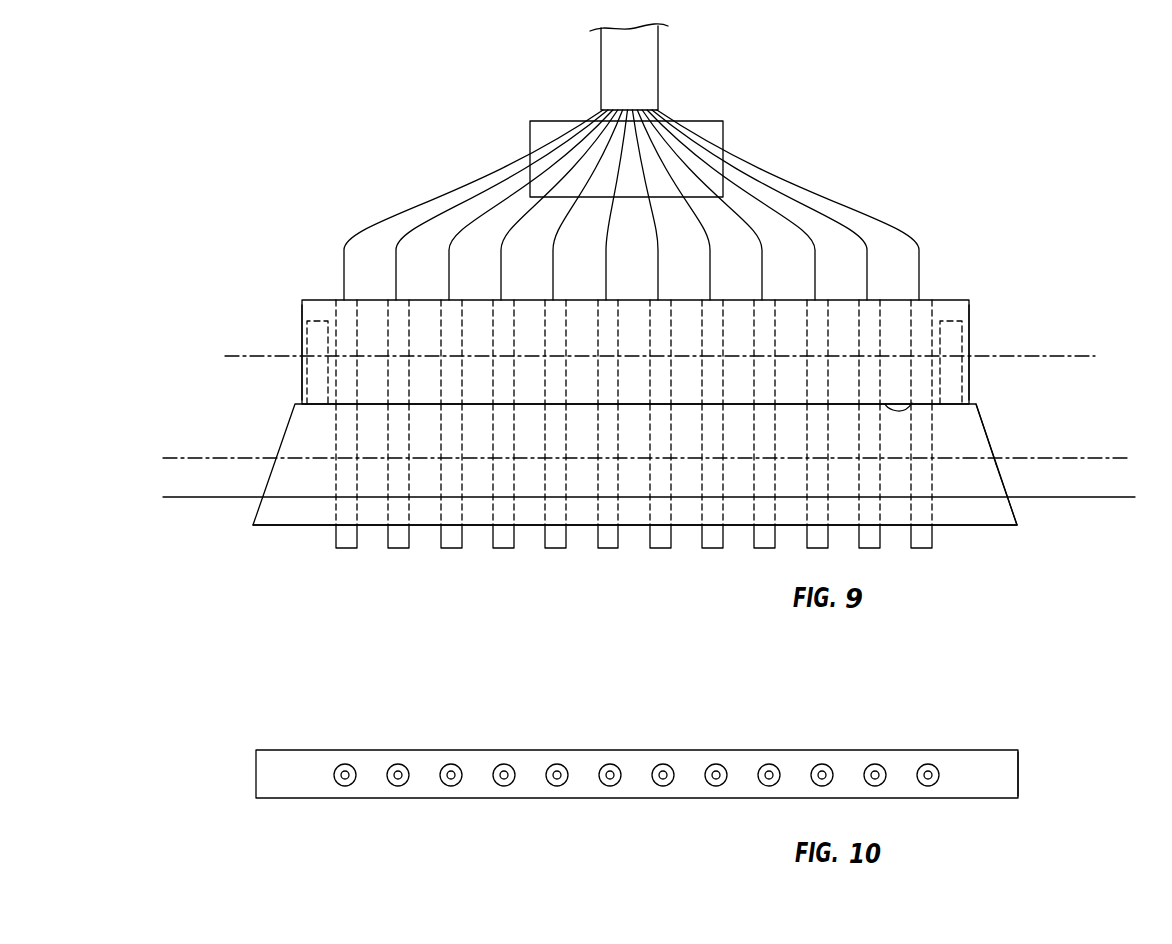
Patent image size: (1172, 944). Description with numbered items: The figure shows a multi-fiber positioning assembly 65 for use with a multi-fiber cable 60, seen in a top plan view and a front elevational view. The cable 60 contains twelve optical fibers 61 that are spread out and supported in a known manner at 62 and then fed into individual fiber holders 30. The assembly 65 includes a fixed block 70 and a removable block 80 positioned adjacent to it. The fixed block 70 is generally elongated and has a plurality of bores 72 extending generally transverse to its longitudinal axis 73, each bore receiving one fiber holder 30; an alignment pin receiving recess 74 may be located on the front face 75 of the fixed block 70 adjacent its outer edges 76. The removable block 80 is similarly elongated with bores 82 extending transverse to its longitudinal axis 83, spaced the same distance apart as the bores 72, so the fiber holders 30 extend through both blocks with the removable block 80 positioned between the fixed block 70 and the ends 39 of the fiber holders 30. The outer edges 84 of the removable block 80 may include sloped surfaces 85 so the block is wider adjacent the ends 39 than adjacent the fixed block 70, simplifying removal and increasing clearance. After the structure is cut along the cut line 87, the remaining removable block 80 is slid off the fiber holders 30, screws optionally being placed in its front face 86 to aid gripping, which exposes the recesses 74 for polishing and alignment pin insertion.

In FIG. 9, the fiber holder 30 is at (344, 548).
In FIG. 10, the fiber holder 30 is at (714, 764).
In FIG. 9, the ends of fiber holders 39 is at (657, 548).
In FIG. 9, the cable 60 is at (642, 55).
In FIG. 9, the optical fibers 61 is at (463, 220).
In FIG. 10, the optical fibers 61 is at (449, 786).
In FIG. 9, the fiber support 62 is at (707, 131).
In FIG. 9, the multi-fiber positioning assembly 65 is at (1026, 160).
In FIG. 9, the fixed block 70 is at (967, 300).
In FIG. 9, the bores 72 is at (388, 330).
In FIG. 9, the longitudinal axis 73 is at (1020, 356).
In FIG. 9, the alignment pin receiving recess 74 is at (318, 343).
In FIG. 9, the front face 75 is at (912, 403).
In FIG. 9, the outer edges 76 is at (302, 315).
In FIG. 9, the removable block 80 is at (970, 428).
In FIG. 10, the removable block 80 is at (883, 750).
In FIG. 9, the bores 82 is at (340, 452).
In FIG. 10, the bores 82 is at (776, 767).
In FIG. 9, the longitudinal axis 83 is at (1107, 458).
In FIG. 9, the outer edges 84 is at (992, 447).
In FIG. 9, the sloped surfaces 85 is at (1003, 480).
In FIG. 9, the front face 86 is at (318, 525).
In FIG. 10, the front face 86 is at (963, 782).
In FIG. 9, the cut line 87 is at (1118, 497).